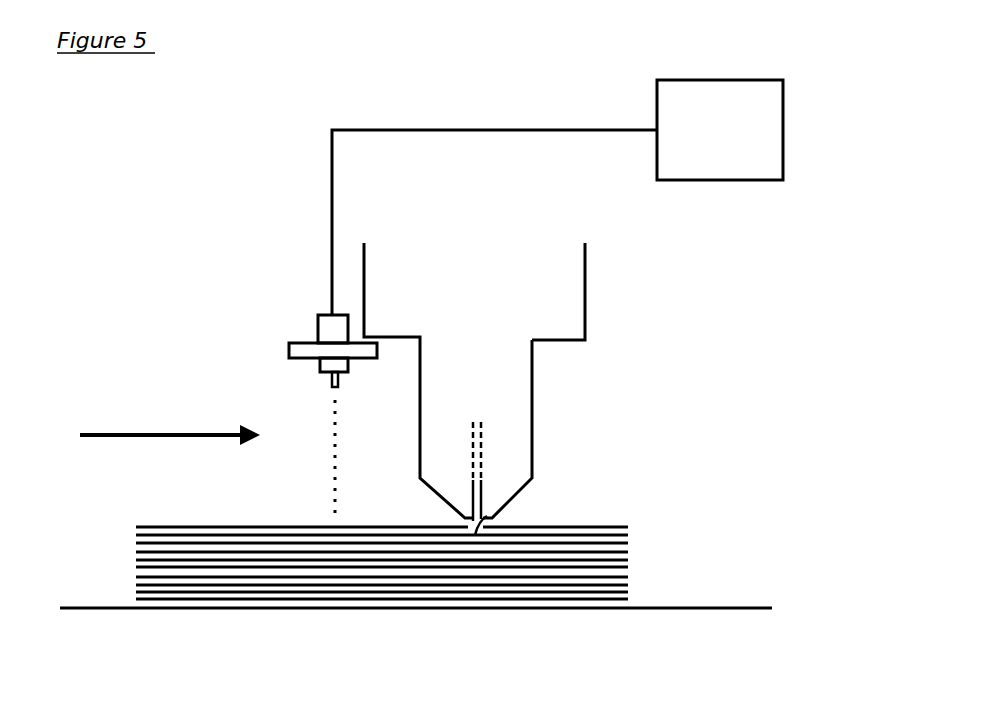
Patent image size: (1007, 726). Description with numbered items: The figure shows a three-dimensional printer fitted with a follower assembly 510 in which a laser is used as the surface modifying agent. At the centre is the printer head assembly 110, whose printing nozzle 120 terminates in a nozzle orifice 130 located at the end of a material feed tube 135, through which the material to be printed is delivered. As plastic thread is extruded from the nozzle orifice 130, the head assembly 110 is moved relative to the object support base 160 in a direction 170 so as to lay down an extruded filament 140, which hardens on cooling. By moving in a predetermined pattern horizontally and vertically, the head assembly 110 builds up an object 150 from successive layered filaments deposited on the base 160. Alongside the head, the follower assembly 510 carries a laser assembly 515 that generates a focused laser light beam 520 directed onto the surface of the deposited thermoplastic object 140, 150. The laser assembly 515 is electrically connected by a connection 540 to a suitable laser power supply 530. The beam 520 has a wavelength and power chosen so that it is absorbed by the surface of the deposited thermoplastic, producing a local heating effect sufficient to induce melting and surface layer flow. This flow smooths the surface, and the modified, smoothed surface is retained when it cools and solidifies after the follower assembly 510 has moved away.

The printer head assembly 110 is at (587, 303).
The printing nozzle 120 is at (532, 403).
The nozzle orifice 130 is at (487, 516).
The material feed tube 135 is at (475, 418).
The extruded filament 140 is at (237, 527).
The object 150 is at (615, 527).
The object support base 160 is at (673, 607).
The direction 170 is at (168, 433).
The follower assembly 510 is at (312, 342).
The laser assembly 515 is at (333, 376).
The laser light beam 520 is at (335, 490).
The laser power supply 530 is at (707, 80).
The connection 540 is at (444, 130).